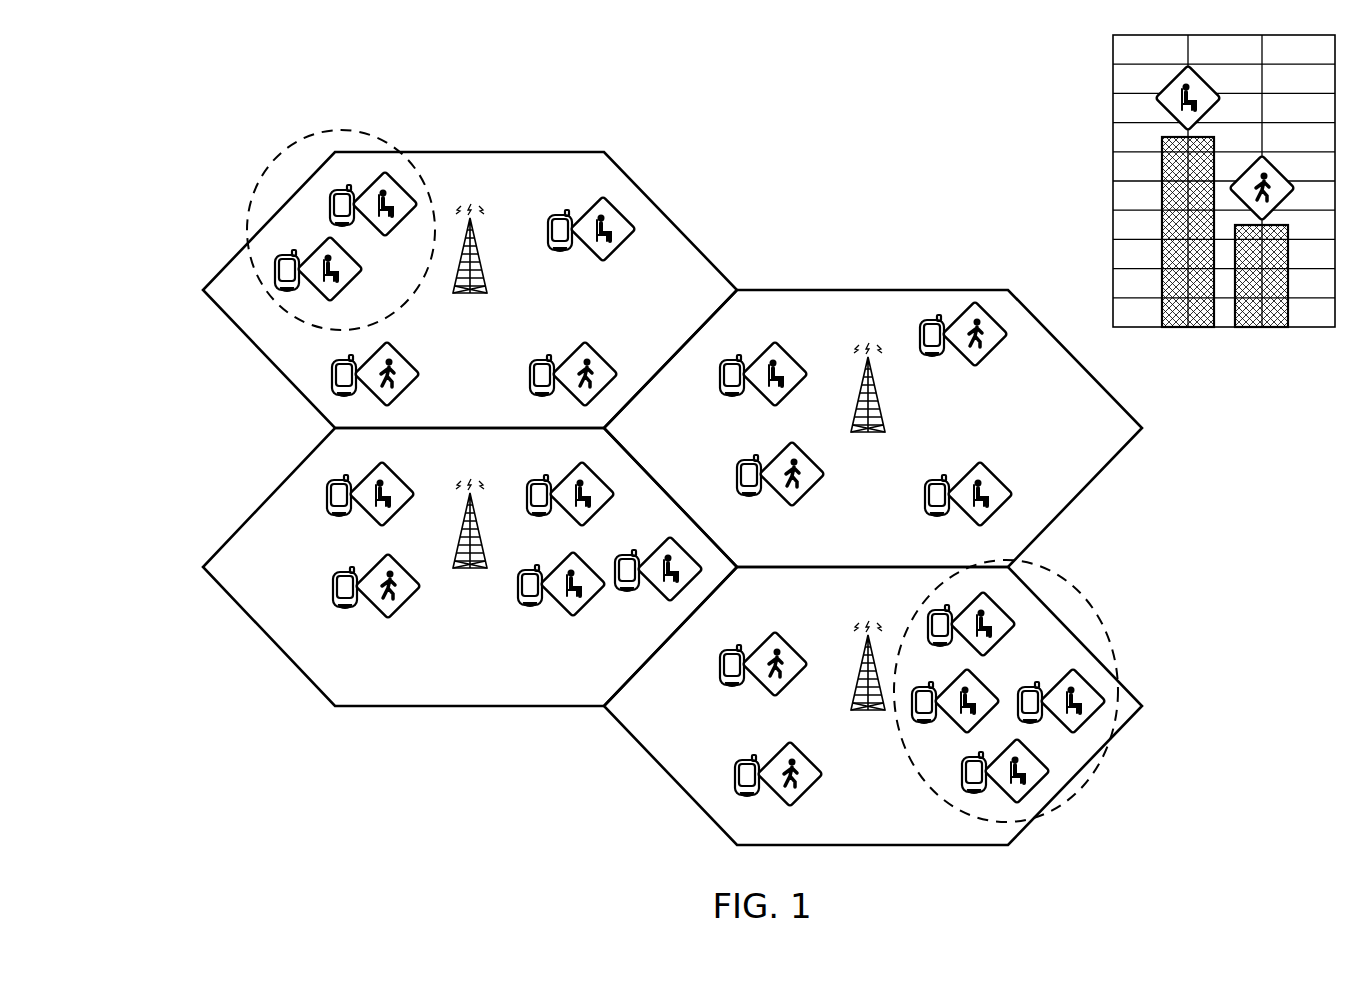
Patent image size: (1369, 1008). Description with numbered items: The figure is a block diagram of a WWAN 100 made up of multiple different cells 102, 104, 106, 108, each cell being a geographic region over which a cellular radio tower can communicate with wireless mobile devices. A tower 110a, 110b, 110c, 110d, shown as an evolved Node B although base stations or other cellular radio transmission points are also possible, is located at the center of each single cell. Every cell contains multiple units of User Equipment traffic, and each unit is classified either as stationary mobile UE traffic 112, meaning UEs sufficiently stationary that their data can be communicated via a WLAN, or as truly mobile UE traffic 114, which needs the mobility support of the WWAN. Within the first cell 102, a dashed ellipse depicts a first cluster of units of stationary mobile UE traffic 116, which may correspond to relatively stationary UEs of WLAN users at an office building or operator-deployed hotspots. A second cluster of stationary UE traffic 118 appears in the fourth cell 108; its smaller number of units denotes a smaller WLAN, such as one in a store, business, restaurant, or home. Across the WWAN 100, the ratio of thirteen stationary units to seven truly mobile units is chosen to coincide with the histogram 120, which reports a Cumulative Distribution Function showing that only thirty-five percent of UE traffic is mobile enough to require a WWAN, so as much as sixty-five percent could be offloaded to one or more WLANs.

The WWAN 100 is at (215, 162).
The first cell 102 is at (1142, 706).
The cell 104 is at (203, 567).
The cell 106 is at (1142, 428).
The fourth cell 108 is at (203, 290).
The tower 110a is at (868, 713).
The tower 110b is at (470, 571).
The tower 110c is at (868, 435).
The tower 110d is at (470, 296).
The stationary mobile UE traffic 112 is at (617, 204).
The truly mobile UE traffic 114 is at (960, 305).
The first cluster of units of stationary mobile UE traffic 116 is at (1092, 608).
The second cluster of stationary UE traffic 118 is at (256, 216).
The histogram 120 is at (1032, 70).